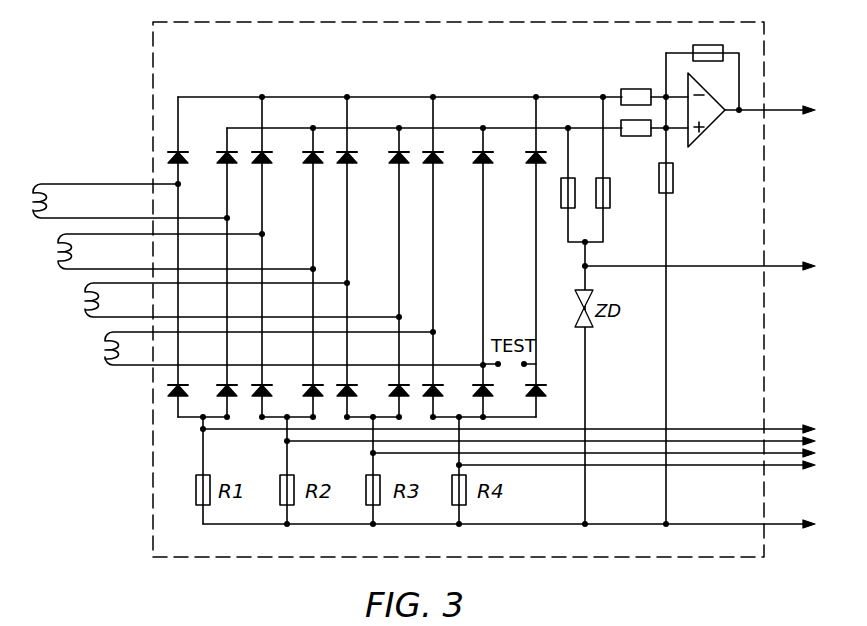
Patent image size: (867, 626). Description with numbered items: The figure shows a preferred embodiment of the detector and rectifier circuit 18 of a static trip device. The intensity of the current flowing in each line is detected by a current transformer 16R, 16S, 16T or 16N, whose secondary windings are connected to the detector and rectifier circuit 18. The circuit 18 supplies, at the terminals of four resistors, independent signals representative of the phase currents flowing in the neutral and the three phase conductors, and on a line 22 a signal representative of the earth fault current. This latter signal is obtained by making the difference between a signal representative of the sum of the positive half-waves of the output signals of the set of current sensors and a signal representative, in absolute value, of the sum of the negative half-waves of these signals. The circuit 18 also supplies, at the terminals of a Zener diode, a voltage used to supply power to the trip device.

The current transformer 16N is at (34, 216).
The current transformer 16R is at (57, 258).
The current transformer 16S is at (83, 305).
The current transformer 16T is at (103, 351).
The detector and rectifier circuit 18 is at (481, 289).
The line 22 is at (777, 104).